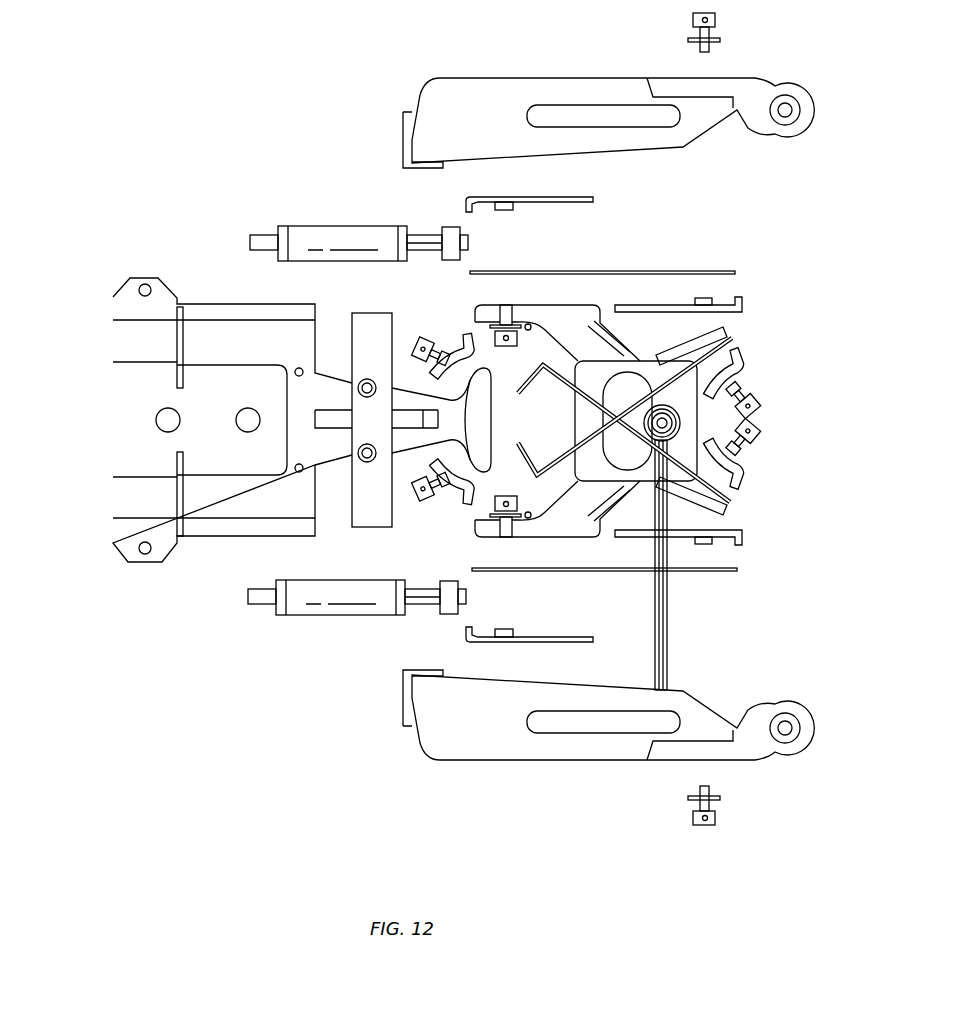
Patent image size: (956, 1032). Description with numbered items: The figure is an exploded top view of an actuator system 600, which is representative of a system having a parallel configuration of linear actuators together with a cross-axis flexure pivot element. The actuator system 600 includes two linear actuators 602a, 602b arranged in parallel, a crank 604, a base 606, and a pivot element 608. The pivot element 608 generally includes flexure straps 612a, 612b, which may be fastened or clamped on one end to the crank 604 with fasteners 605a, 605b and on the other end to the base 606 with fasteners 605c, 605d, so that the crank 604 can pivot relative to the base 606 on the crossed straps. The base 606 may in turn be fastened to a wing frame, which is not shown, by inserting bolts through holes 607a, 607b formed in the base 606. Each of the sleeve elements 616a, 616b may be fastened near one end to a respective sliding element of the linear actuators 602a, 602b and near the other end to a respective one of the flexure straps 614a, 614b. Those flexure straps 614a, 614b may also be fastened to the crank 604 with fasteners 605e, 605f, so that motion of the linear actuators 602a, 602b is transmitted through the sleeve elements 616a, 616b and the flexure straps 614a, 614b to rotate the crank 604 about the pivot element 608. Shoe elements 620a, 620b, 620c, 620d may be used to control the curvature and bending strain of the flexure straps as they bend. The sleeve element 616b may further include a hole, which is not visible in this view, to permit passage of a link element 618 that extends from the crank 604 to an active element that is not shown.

The actuator system 600 is at (172, 112).
The linear actuator 602a is at (318, 212).
The linear actuator 602b is at (316, 636).
The crank 604 is at (720, 338).
The fastener 605a is at (749, 388).
The fastener 605b is at (752, 461).
The fastener 605c is at (445, 353).
The fastener 605d is at (450, 549).
The fastener 605e is at (507, 348).
The fastener 605f is at (510, 487).
The base 606 is at (125, 276).
The hole 607a is at (165, 418).
The hole 607b is at (248, 412).
The pivot element 608 is at (626, 441).
The flexure strap 612a is at (550, 376).
The flexure strap 612b is at (536, 462).
The flexure strap 614a is at (635, 268).
The flexure strap 614b is at (577, 573).
The sleeve element 616a is at (530, 70).
The sleeve element 616b is at (509, 766).
The link element 618 is at (668, 656).
The shoe element 620a is at (556, 196).
The shoe element 620b is at (511, 646).
The shoe element 620c is at (735, 297).
The shoe element 620d is at (722, 544).